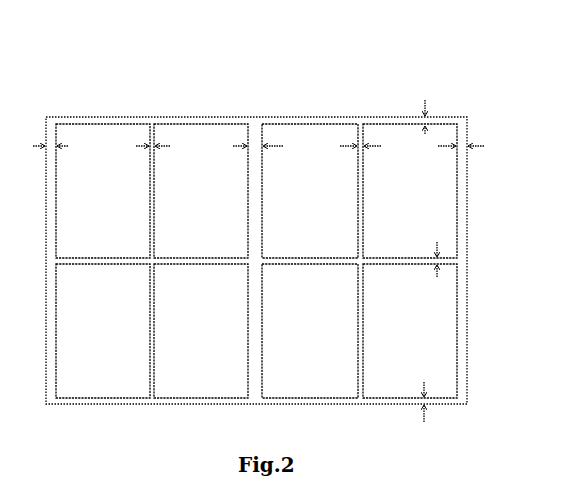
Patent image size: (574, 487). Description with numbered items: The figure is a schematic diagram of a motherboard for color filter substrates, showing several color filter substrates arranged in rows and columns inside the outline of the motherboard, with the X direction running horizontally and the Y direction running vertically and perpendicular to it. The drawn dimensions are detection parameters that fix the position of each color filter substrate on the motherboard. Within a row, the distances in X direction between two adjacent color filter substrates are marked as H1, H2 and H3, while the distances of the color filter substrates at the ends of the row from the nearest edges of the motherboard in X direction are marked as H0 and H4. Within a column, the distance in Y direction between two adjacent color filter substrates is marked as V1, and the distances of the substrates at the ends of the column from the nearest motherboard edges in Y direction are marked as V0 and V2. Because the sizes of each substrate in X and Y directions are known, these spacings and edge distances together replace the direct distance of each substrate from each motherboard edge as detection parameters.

The distance of end color filter substrate from nearest motherboard edge in X direct H0 is at (458, 157).
The distance in X direction between two adjacent color filter substrates H1 is at (363, 157).
The distance in X direction between two adjacent color filter substrates H2 is at (260, 157).
The distance in X direction between two adjacent color filter substrates H3 is at (161, 157).
The distance of end color filter substrate from nearest motherboard edge in X direct H4 is at (55, 157).
The distance of end color filter substrate from nearest motherboard edge in Y direct V0 is at (413, 122).
The distance in Y direction between two adjacent color filter substrates V1 is at (425, 263).
The distance of end color filter substrate from nearest motherboard edge in Y direct V2 is at (410, 402).